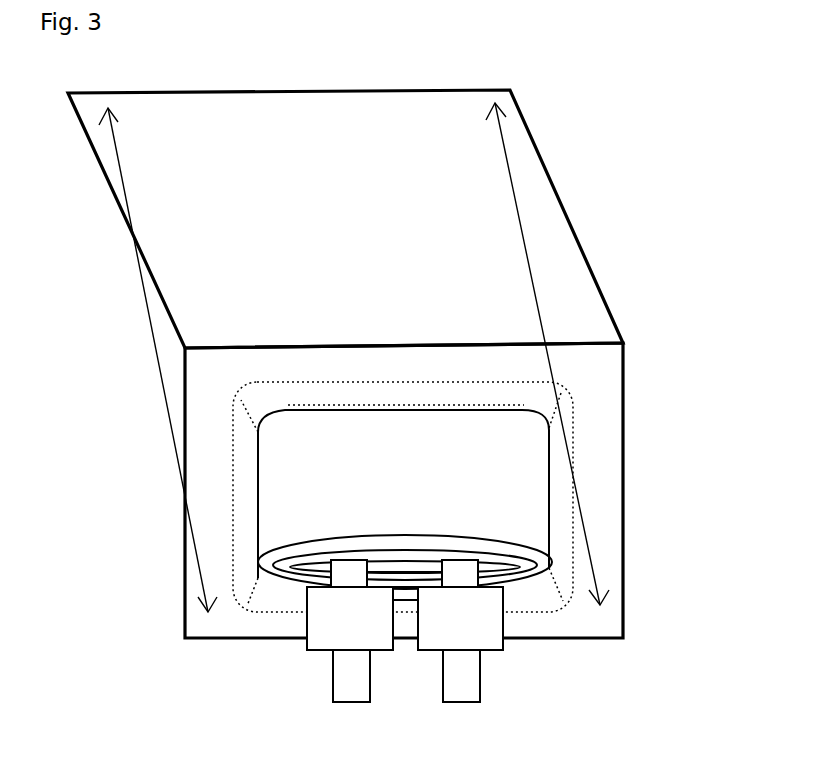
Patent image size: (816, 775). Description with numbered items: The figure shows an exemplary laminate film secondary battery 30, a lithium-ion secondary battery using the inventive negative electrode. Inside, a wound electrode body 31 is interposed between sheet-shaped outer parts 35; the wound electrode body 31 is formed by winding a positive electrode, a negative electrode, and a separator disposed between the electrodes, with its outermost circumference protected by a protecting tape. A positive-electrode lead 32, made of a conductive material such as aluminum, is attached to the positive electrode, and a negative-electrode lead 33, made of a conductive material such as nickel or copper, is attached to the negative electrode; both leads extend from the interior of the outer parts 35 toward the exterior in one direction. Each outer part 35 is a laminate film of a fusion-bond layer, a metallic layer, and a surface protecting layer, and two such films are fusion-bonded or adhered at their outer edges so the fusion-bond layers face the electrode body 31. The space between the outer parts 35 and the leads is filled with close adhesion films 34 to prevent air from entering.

The laminate film secondary battery 30 is at (372, 339).
The wound electrode body 31 is at (503, 475).
The positive-electrode lead 32 is at (346, 683).
The negative-electrode lead 33 is at (461, 682).
The close adhesion film 34 is at (485, 623).
The outer part 35 is at (420, 226).